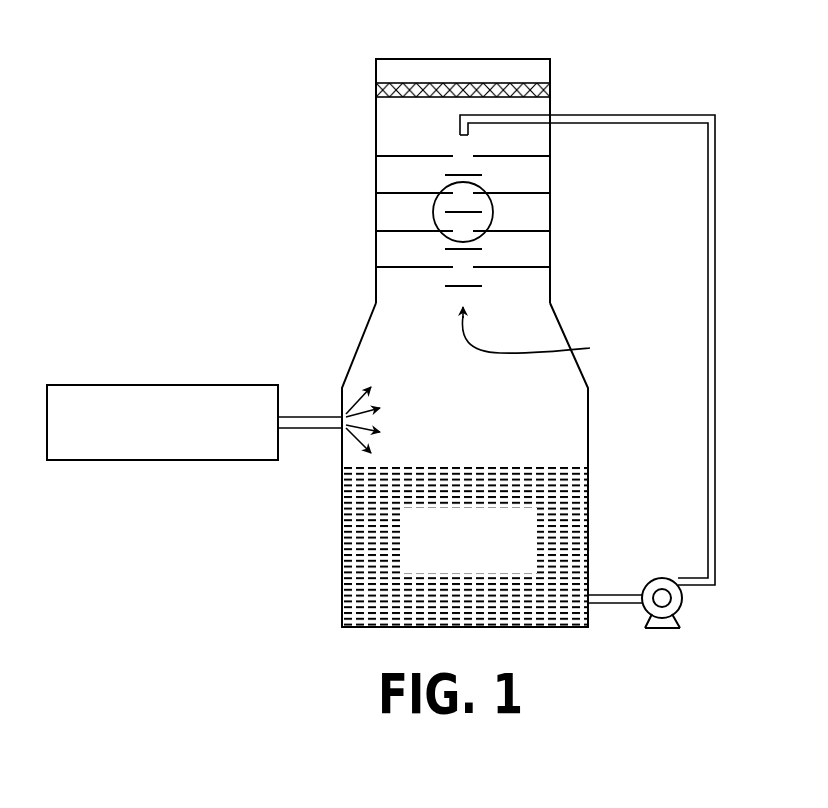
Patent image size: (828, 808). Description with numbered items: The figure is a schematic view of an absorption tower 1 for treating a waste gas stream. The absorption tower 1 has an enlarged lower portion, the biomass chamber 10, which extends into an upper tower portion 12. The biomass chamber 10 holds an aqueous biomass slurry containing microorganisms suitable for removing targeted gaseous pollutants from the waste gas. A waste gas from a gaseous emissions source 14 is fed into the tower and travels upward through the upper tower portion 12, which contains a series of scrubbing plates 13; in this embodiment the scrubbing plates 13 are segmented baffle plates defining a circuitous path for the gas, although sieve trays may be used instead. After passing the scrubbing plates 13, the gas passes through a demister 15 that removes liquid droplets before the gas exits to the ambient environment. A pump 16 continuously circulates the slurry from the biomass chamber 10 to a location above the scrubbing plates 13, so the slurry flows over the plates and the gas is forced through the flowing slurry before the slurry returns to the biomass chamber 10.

The absorption tower 1 is at (362, 186).
The biomass chamber 10 is at (342, 536).
The upper tower portion 12 is at (376, 243).
The scrubbing plates 13 is at (541, 333).
The gaseous emissions source 14 is at (150, 385).
The demister 15 is at (449, 84).
The pump 16 is at (682, 598).